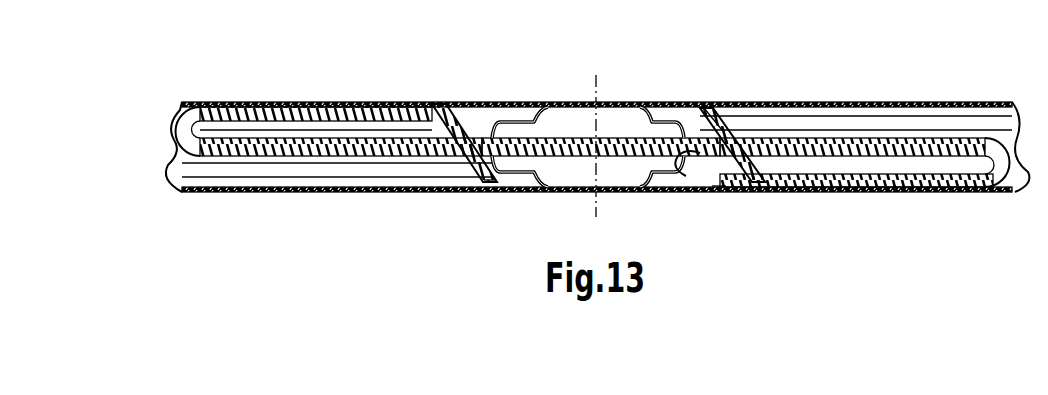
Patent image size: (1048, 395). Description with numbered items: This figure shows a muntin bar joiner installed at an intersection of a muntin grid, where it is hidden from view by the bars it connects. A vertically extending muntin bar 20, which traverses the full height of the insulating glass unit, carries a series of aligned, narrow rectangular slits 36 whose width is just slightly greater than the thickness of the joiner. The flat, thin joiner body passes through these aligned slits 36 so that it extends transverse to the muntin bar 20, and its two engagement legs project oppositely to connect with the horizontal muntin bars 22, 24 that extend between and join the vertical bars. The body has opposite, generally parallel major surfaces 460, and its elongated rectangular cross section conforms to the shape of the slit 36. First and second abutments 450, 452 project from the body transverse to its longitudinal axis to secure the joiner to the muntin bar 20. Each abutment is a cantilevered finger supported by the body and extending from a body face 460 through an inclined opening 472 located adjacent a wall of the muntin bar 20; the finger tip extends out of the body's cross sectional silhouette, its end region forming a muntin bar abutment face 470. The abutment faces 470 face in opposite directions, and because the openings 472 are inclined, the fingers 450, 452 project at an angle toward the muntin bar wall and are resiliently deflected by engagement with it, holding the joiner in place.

The vertically extending muntin bar 20 is at (622, 102).
The horizontal muntin bar 22 is at (305, 102).
The horizontal muntin bar 24 is at (812, 102).
The slit 36 is at (683, 176).
The first abutment 450 is at (490, 178).
The second abutment 452 is at (714, 102).
The major surface 460 is at (585, 128).
The muntin bar abutment face 470 is at (476, 118).
The opening 472 is at (718, 187).